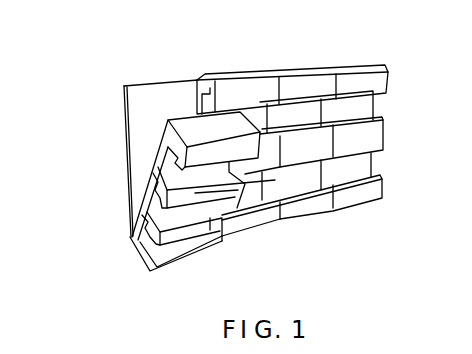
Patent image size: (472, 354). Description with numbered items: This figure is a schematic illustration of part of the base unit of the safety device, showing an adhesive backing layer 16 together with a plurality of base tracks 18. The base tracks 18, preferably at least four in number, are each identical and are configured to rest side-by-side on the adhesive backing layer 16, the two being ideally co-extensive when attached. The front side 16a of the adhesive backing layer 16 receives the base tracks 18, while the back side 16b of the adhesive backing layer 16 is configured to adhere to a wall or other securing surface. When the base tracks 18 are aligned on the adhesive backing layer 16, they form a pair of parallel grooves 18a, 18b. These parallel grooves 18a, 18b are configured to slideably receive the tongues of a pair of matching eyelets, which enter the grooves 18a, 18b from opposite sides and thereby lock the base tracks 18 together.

The adhesive backing layer 16 is at (163, 82).
The front side of the adhesive backing layer 16a is at (195, 114).
The back side of the adhesive backing layer 16b is at (108, 100).
The base tracks 18 is at (369, 82).
The groove 18a is at (356, 108).
The groove 18b is at (354, 168).